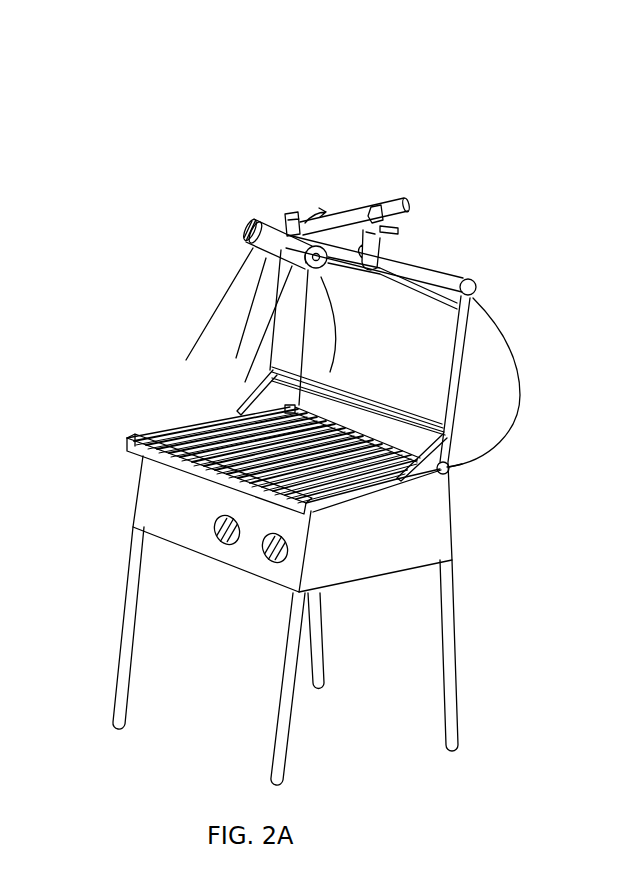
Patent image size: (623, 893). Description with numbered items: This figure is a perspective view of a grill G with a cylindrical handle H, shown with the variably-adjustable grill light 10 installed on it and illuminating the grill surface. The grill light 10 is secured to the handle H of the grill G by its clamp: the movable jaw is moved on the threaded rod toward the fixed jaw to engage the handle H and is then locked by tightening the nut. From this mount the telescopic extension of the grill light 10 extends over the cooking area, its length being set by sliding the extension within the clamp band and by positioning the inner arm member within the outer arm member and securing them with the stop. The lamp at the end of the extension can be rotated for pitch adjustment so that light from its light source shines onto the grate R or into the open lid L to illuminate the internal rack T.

The variably-adjustable grill light 10 is at (391, 196).
The handle H is at (440, 277).
The lid L is at (487, 373).
The grate R is at (203, 422).
The internal rack T is at (358, 347).
The grill G is at (380, 540).